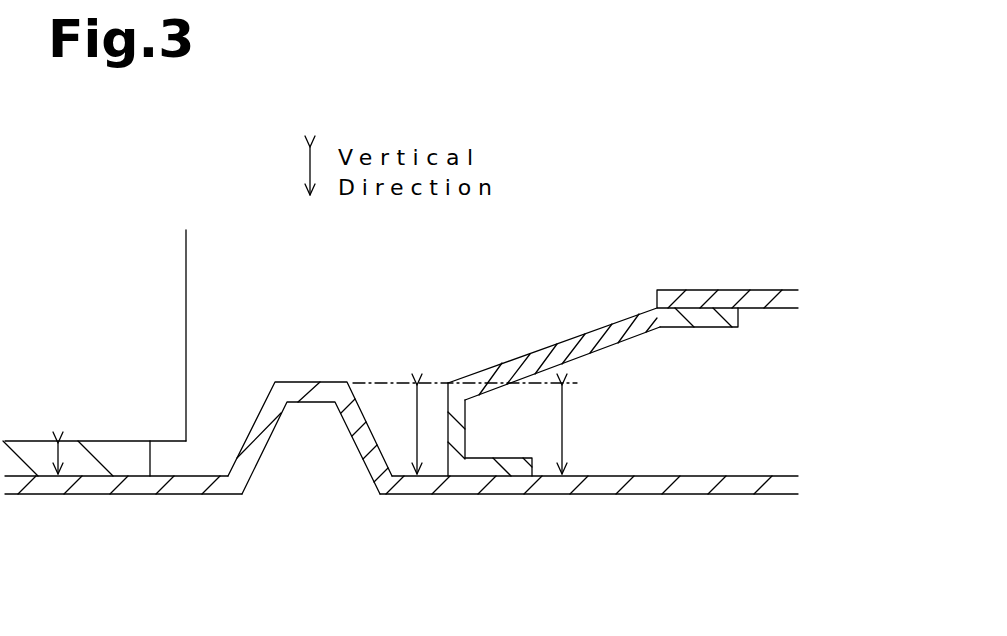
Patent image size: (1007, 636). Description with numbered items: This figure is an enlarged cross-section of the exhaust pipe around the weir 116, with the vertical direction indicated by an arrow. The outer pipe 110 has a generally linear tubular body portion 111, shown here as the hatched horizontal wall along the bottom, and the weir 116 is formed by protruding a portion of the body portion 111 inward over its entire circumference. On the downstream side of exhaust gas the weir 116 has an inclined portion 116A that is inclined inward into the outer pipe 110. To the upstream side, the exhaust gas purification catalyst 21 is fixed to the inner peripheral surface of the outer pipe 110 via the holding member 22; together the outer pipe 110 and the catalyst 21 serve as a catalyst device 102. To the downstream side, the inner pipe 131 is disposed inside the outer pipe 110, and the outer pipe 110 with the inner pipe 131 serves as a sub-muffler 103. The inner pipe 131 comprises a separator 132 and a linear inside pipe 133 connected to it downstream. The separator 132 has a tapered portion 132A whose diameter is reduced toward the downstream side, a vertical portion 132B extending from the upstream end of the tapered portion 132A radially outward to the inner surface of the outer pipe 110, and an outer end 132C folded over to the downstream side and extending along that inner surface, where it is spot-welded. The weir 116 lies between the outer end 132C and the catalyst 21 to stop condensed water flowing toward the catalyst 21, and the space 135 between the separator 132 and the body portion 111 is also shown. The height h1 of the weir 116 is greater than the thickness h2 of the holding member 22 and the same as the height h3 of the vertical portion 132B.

The catalyst device 102 is at (102, 213).
The sub-muffler 103 is at (653, 135).
The exhaust gas purification catalyst 21 is at (187, 268).
The holding member 22 is at (150, 476).
The outer pipe 110 is at (595, 548).
The body portion 111 is at (635, 495).
The weir 116 is at (332, 372).
The inclined portion 116A is at (268, 381).
The inner pipe 131 is at (730, 228).
The separator 132 is at (578, 327).
The tapered portion 132A is at (613, 343).
The vertical portion 132B is at (447, 445).
The outer end 132C is at (537, 467).
The inside pipe 133 is at (707, 290).
The space 135 is at (717, 441).
The height of the weir h1 is at (416, 429).
The thickness of the holding member h2 is at (59, 458).
The height of the vertical portion h3 is at (563, 429).